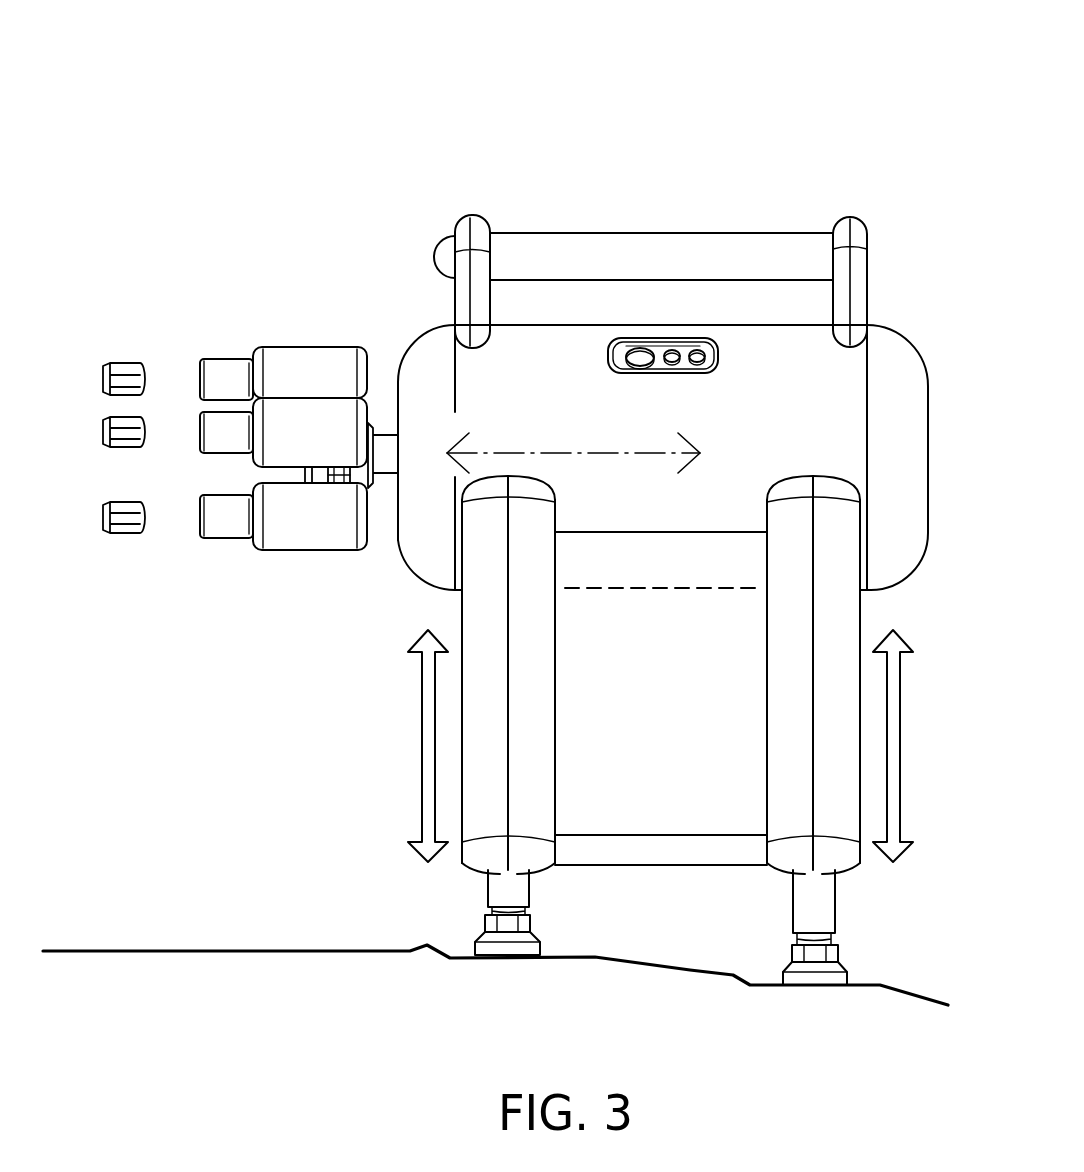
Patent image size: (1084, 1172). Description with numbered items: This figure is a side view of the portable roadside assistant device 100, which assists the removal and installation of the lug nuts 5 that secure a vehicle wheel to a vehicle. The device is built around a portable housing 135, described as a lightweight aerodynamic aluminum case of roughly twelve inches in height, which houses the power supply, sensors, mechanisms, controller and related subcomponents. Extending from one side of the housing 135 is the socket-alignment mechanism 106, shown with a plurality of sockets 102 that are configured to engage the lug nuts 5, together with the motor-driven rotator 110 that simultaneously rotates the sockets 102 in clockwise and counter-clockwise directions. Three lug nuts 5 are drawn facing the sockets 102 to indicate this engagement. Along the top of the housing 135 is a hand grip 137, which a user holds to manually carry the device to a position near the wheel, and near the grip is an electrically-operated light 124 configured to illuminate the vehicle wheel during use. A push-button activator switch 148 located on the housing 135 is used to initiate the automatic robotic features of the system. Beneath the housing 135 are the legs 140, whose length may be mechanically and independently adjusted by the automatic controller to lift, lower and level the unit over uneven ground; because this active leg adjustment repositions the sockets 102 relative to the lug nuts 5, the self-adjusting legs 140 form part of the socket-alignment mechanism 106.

The portable roadside assistant device 100 is at (850, 130).
The socket-alignment mechanism 106 is at (355, 177).
The motor-driven rotator 110 is at (318, 415).
The sockets 102 is at (225, 358).
The lug nuts 5 is at (102, 370).
The electrically-operated light 124 is at (442, 243).
The hand grip 137 is at (661, 240).
The portable housing 135 is at (884, 326).
The push-button activator switch 148 is at (625, 373).
The legs 140 is at (488, 890).